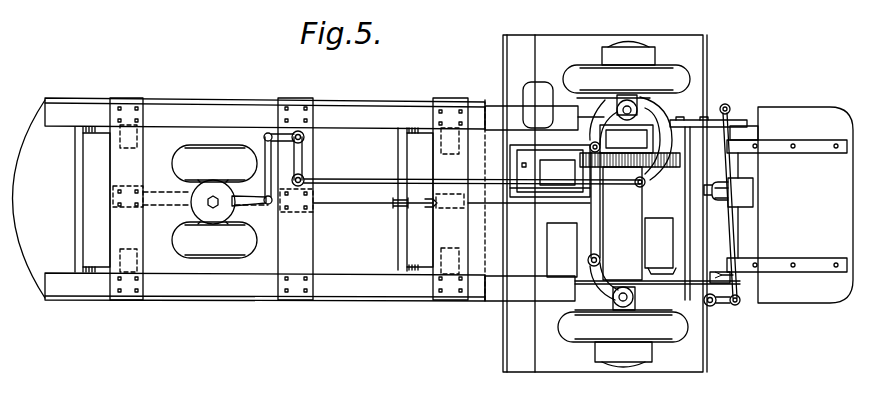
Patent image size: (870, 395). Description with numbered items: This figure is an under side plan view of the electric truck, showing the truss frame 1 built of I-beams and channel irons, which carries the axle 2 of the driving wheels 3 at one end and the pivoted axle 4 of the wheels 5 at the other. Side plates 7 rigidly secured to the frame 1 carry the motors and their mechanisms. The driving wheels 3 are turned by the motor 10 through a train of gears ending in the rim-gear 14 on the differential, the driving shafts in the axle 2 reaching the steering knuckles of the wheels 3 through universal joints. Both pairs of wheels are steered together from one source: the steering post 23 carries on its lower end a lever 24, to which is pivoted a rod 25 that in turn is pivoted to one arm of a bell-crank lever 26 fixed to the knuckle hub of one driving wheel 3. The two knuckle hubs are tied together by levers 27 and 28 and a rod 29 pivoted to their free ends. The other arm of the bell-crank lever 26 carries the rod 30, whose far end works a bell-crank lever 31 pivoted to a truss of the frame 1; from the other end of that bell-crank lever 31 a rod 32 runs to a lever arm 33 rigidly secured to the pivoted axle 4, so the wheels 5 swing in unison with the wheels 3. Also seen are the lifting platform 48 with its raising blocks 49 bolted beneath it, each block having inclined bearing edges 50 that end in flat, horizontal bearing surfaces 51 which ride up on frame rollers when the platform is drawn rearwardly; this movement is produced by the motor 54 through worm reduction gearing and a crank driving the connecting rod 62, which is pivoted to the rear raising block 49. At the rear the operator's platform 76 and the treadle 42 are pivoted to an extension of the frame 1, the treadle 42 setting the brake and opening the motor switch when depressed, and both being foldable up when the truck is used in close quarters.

The truss frame 1 is at (265, 200).
The axle of the driving wheels 2 is at (622, 223).
The driving wheels 3 is at (624, 205).
The pivoted axle 4 is at (200, 210).
The wheels 5 is at (214, 201).
The side plates 7 is at (672, 286).
The motor 10 is at (660, 246).
The rim-gear 14 is at (636, 143).
The steering post 23 is at (712, 307).
The lever 24 is at (728, 306).
The rod 25 is at (737, 248).
The bell-crank lever 26 is at (663, 112).
The lever 27 is at (598, 116).
The lever 28 is at (592, 288).
The rod 29 is at (590, 240).
The rod 30 is at (617, 187).
The bell-crank lever 31 is at (300, 160).
The rod 32 is at (265, 150).
The lever arm 33 is at (246, 203).
The treadle 42 is at (745, 193).
The platform 48 is at (31, 199).
The raising blocks 49 is at (95, 171).
The inclined bearing edges 50 is at (83, 270).
The flat, horizontal bearing surfaces 51 is at (80, 234).
The motor 54 is at (520, 140).
The connecting rod 62 is at (516, 208).
The platform 76 is at (781, 205).